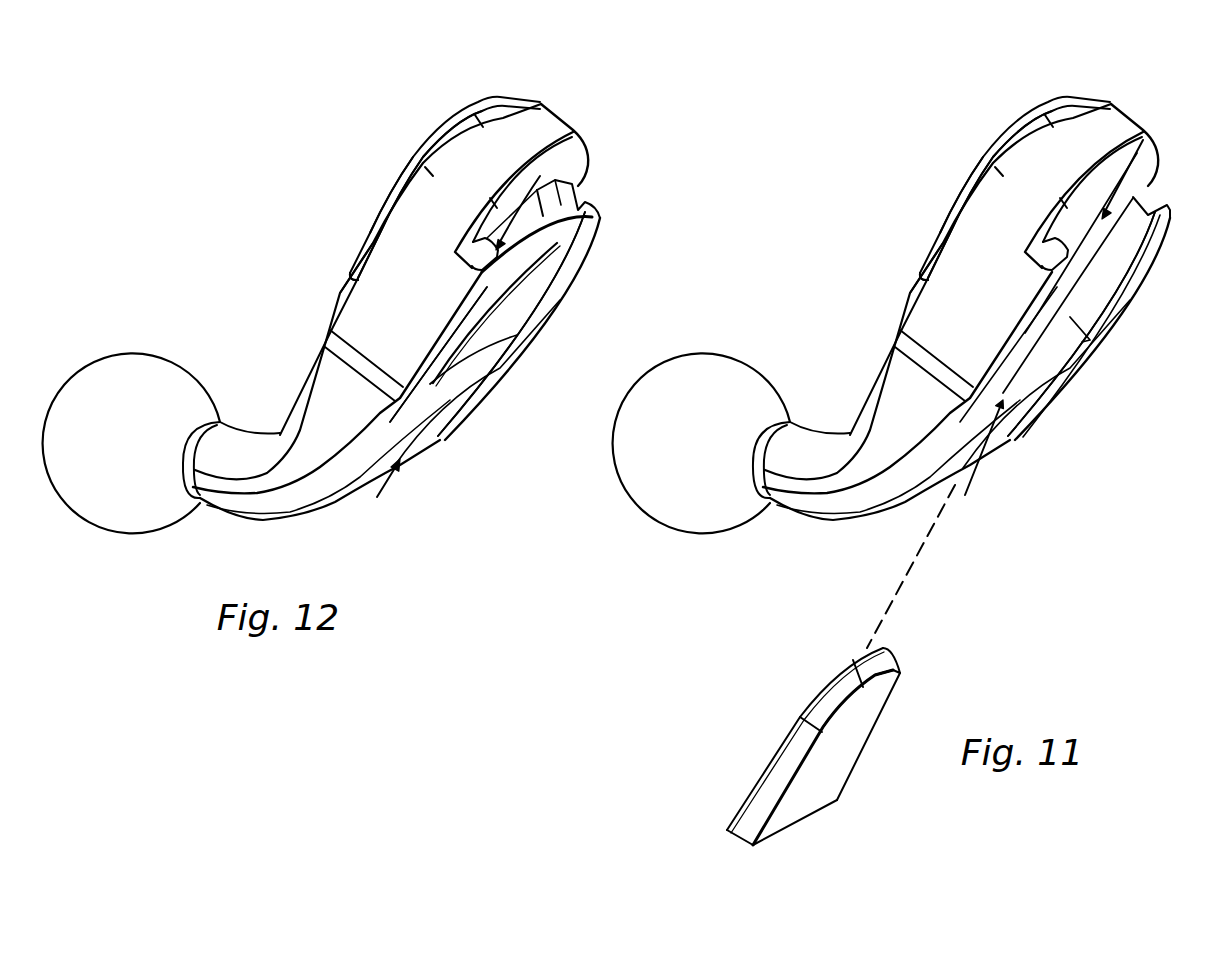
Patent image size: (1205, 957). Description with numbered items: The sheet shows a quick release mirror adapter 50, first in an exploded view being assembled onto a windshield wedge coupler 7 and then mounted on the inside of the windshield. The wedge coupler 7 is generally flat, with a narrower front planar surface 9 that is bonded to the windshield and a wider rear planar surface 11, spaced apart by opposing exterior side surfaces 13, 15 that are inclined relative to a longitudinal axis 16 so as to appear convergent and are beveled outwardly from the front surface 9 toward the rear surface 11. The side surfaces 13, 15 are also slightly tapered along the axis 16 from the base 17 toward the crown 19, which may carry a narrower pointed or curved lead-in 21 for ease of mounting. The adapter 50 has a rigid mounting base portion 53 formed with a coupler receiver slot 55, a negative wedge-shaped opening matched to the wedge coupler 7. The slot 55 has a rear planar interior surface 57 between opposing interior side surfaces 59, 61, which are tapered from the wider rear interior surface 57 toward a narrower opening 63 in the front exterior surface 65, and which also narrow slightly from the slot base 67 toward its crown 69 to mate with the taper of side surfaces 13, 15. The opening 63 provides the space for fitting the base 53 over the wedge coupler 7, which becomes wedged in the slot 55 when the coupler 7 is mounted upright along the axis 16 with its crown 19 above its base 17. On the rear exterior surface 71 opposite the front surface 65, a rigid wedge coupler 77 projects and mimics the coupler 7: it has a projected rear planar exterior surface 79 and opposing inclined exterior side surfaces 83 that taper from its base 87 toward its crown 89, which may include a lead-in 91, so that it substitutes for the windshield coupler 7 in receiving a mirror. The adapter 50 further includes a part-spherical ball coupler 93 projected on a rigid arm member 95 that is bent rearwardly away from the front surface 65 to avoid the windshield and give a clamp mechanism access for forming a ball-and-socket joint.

In FIG. 12, the ball coupler 93 is at (110, 460).
In FIG. 11, the ball coupler 93 is at (701, 443).
In FIG. 12, the arm member 95 is at (223, 510).
In FIG. 11, the arm member 95 is at (886, 482).
In FIG. 12, the mirror adapter 50 is at (297, 398).
In FIG. 11, the mirror adapter 50 is at (947, 291).
In FIG. 12, the mounting base portion 53 is at (380, 338).
In FIG. 11, the mounting base portion 53 is at (935, 357).
In FIG. 12, the wedge coupler 77 is at (443, 128).
In FIG. 11, the wedge coupler 77 is at (1015, 175).
In FIG. 12, the lead-in 91 is at (457, 120).
In FIG. 11, the lead-in 91 is at (1001, 147).
In FIG. 12, the crown 89 is at (485, 113).
In FIG. 11, the crown 89 is at (1025, 118).
In FIG. 12, the crown 69 is at (557, 118).
In FIG. 11, the crown 69 is at (1134, 130).
In FIG. 12, the coupler receiver slot 55 is at (572, 134).
In FIG. 11, the coupler receiver slot 55 is at (1100, 183).
In FIG. 12, the rear planar exterior surface 79 is at (397, 190).
In FIG. 11, the rear planar exterior surface 79 is at (942, 183).
In FIG. 12, the exterior side surface 83 is at (395, 200).
In FIG. 11, the exterior side surface 83 is at (926, 222).
In FIG. 12, the rear exterior surface 71 is at (383, 227).
In FIG. 11, the rear exterior surface 71 is at (918, 244).
In FIG. 12, the crown 19 is at (560, 200).
In FIG. 11, the crown 19 is at (878, 665).
In FIG. 12, the front exterior surface 65 is at (584, 245).
In FIG. 11, the front exterior surface 65 is at (1102, 318).
In FIG. 12, the base 87 is at (352, 280).
In FIG. 11, the base 87 is at (890, 299).
In FIG. 12, the exterior side surface 15 is at (486, 324).
In FIG. 11, the exterior side surface 15 is at (864, 756).
In FIG. 12, the interior side surface 61 is at (540, 292).
In FIG. 11, the interior side surface 61 is at (1097, 288).
In FIG. 12, the wedge coupler 7 is at (540, 262).
In FIG. 11, the wedge coupler 7 is at (742, 840).
In FIG. 12, the exterior side surface 13 is at (529, 314).
In FIG. 11, the exterior side surface 13 is at (765, 800).
In FIG. 12, the interior side surface 59 is at (483, 315).
In FIG. 11, the interior side surface 59 is at (1045, 312).
In FIG. 12, the front planar surface 9 is at (487, 338).
In FIG. 11, the front planar surface 9 is at (828, 770).
In FIG. 12, the base 17 is at (463, 367).
In FIG. 11, the base 17 is at (800, 827).
In FIG. 12, the base 67 is at (450, 385).
In FIG. 11, the base 67 is at (942, 382).
In FIG. 12, the opening 63 is at (382, 492).
In FIG. 11, the opening 63 is at (976, 462).
In FIG. 11, the rear planar interior surface 57 is at (1080, 280).
In FIG. 11, the longitudinal axis 16 is at (895, 592).
In FIG. 11, the lead-in 21 is at (893, 670).
In FIG. 11, the rear planar surface 11 is at (777, 750).